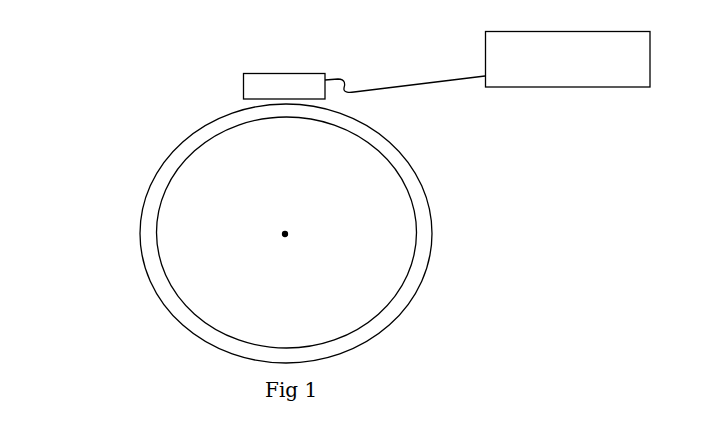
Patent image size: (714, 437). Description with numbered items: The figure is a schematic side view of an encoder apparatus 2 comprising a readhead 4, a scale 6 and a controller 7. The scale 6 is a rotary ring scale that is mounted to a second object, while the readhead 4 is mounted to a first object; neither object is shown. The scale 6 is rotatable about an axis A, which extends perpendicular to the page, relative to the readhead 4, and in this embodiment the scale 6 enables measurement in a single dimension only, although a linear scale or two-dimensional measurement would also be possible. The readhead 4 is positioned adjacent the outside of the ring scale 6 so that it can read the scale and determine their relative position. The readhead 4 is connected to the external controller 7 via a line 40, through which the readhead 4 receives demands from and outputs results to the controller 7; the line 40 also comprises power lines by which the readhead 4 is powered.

The encoder apparatus 2 is at (122, 25).
The readhead 4 is at (239, 85).
The scale 6 is at (379, 124).
The controller 7 is at (540, 92).
The line 40 is at (417, 70).
The axis A is at (282, 224).